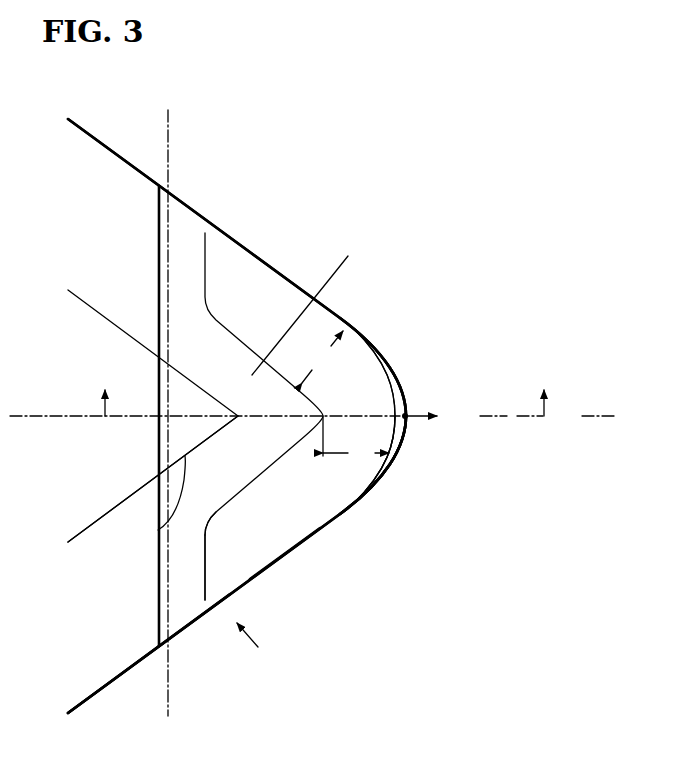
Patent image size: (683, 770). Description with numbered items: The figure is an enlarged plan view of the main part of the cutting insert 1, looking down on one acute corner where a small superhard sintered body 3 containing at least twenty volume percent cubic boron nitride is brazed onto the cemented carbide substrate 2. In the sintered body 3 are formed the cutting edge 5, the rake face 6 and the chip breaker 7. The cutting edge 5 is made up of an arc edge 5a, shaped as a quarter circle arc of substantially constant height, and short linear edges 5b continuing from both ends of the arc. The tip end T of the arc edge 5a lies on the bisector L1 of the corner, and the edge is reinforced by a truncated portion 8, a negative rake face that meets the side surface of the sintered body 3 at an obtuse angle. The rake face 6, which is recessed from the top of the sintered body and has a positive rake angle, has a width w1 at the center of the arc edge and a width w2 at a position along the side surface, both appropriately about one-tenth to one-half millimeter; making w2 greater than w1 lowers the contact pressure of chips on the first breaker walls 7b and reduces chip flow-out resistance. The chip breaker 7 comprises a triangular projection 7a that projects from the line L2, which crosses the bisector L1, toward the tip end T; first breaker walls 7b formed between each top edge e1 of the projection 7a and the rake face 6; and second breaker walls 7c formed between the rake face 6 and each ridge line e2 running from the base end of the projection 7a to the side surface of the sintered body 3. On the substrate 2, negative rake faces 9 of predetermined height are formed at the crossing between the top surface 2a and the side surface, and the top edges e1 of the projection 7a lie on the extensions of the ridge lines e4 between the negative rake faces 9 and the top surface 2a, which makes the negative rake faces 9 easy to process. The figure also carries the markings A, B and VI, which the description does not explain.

The cutting insert 1 is at (202, 187).
The substrate 2 is at (113, 679).
The top surface 2a is at (90, 649).
The superhard sintered body 3 is at (190, 622).
The cutting edge 5 is at (448, 536).
The arc edge 5a is at (385, 478).
The linear edge 5b is at (352, 504).
The rake face 6 is at (295, 545).
The chip breaker 7 is at (228, 330).
The projection 7a is at (176, 432).
The first breaker wall 7b is at (310, 306).
The second breaker wall 7c is at (193, 548).
The truncated portion 8 is at (365, 340).
The negative rake face 9 is at (78, 590).
The top edge of the projection e1 is at (158, 531).
The ridge line e2 is at (158, 268).
The ridge line e4 is at (100, 512).
The width of the rake face at the center of the arc edge w1 is at (356, 440).
The width of the rake face along the side surface w2 is at (322, 357).
The tip end of the arc edge T is at (410, 412).
The direction B is at (440, 419).
The direction A is at (256, 645).
The bisector of the corner L1 is at (328, 419).
The line crossing the bisector L2 is at (165, 403).
The section line VI is at (323, 403).